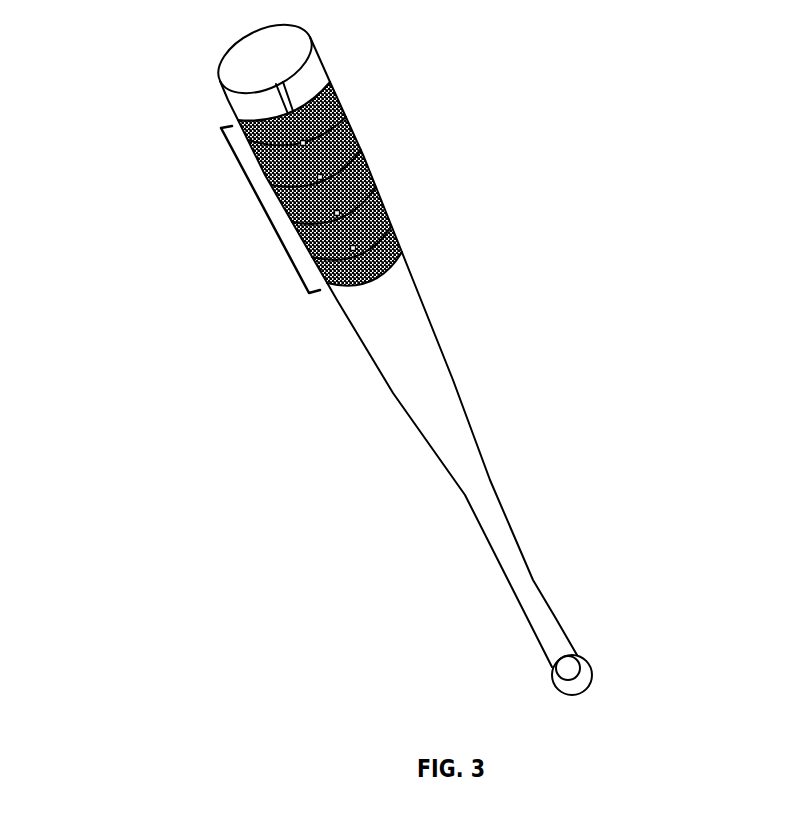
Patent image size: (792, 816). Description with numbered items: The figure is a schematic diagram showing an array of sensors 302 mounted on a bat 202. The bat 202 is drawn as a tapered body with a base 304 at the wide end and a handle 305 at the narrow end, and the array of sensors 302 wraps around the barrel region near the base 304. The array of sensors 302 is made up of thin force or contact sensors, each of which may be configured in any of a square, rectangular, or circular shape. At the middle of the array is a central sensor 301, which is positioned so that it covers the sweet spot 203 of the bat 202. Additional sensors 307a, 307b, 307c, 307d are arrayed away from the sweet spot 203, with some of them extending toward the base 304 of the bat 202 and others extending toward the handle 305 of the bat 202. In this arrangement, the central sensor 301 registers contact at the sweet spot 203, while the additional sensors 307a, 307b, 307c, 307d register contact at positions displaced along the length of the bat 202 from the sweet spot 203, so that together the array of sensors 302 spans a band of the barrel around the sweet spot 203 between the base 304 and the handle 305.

The bat 202 is at (446, 364).
The sweet spot 203 is at (438, 212).
The central sensor 301 is at (403, 182).
The array of sensors 302 is at (250, 187).
The base 304 is at (326, 66).
The handle 305 is at (652, 667).
The additional sensor 307a is at (373, 109).
The additional sensor 307b is at (394, 147).
The additional sensor 307c is at (380, 217).
The additional sensor 307d is at (473, 239).